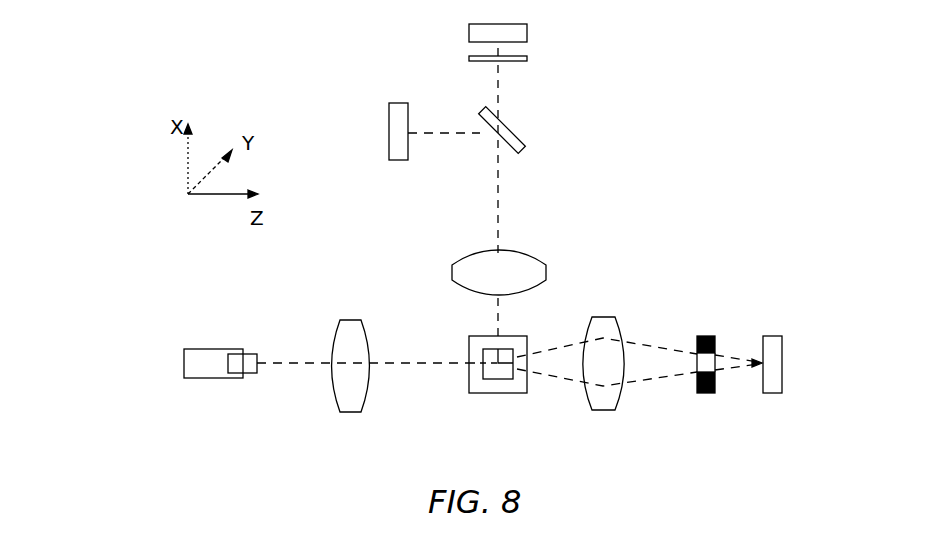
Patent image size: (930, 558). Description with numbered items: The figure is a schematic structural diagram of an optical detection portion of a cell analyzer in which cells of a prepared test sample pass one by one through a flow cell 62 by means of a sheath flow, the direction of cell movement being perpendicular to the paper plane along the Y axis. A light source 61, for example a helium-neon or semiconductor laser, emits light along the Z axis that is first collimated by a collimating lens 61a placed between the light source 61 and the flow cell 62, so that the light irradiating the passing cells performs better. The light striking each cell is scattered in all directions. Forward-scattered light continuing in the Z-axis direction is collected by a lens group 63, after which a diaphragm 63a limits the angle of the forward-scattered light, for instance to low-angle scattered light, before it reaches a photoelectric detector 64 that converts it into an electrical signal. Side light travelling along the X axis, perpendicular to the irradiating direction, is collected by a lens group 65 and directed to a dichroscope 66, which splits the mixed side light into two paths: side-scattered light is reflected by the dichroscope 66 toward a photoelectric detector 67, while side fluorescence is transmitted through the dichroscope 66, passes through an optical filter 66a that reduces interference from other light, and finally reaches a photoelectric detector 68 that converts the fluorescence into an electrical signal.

The light source 61 is at (218, 378).
The collimating lens 61a is at (352, 412).
The flow cell 62 is at (500, 393).
The lens group 63 is at (604, 410).
The diaphragm 63a is at (710, 393).
The photoelectric detector 64 is at (776, 393).
The lens group 65 is at (546, 268).
The dichroscope 66 is at (524, 132).
The optical filter 66a is at (527, 57).
The photoelectric detector 67 is at (400, 160).
The photoelectric detector 68 is at (527, 24).